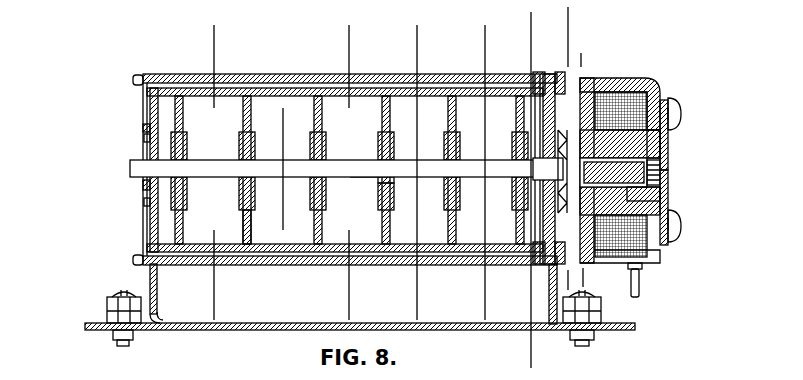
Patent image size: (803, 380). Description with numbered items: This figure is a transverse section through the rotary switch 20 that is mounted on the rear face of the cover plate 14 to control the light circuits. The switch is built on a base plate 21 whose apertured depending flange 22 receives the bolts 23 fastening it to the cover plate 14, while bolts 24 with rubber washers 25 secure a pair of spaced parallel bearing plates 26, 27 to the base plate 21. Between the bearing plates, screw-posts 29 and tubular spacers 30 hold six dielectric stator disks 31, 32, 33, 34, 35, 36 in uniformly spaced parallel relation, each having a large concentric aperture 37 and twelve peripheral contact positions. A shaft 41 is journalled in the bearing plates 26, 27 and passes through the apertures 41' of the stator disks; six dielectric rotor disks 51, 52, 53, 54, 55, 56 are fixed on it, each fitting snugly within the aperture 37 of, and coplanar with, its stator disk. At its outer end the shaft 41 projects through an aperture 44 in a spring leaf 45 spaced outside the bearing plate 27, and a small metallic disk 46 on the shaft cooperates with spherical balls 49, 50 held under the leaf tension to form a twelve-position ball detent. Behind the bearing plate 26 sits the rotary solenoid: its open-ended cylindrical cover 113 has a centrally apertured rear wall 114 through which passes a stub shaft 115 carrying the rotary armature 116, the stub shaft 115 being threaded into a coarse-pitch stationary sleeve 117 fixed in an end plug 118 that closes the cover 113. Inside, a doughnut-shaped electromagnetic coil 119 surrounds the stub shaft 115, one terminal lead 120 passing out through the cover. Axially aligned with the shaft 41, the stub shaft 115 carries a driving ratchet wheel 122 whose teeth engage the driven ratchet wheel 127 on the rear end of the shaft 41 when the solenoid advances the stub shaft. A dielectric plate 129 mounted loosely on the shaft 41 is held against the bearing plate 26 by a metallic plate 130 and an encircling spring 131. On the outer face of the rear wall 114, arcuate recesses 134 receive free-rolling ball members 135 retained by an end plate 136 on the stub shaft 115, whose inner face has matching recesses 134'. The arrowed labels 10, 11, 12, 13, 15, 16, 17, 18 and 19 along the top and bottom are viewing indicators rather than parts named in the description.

The motor section 10 is at (581, 62).
The coupling section 11 is at (568, 47).
The end wall section 12 is at (568, 40).
The sixth stage 13 is at (531, 33).
The cover plate 14 is at (531, 18).
The fifth stage 15 is at (485, 33).
The stage section 16 is at (485, 66).
The fourth stage 17 is at (417, 33).
The stage section 18 is at (417, 66).
The lamp 19 is at (349, 33).
The rotary switch 20 is at (78, 260).
The base plate 21 is at (282, 330).
The depending flange 22 is at (283, 66).
The bolts 23 is at (214, 33).
The bolts 24 is at (118, 296).
The rubber washers 25 is at (110, 315).
The bearing plate 26 is at (147, 112).
The bearing plate 27 is at (152, 331).
The screw-posts 29 is at (388, 104).
The tubular spacers 30 is at (314, 177).
The dielectric stator disk 31 is at (517, 116).
The dielectric stator disk 32 is at (448, 116).
The dielectric stator disk 33 is at (382, 118).
The dielectric stator disk 34 is at (314, 117).
The dielectric stator disk 35 is at (243, 117).
The dielectric stator disk 36 is at (182, 110).
The concentric aperture 37 is at (246, 209).
The shaft 41 is at (406, 192).
The apertures 41' is at (359, 194).
The aperture 44 is at (133, 162).
The spring leaf 45 is at (141, 127).
The small metallic disk 46 is at (143, 185).
The spherical ball 49 is at (143, 138).
The spherical ball 50 is at (143, 202).
The dielectric rotor disk 51 is at (514, 188).
The dielectric rotor disk 52 is at (448, 196).
The dielectric rotor disk 53 is at (391, 195).
The dielectric rotor disk 54 is at (312, 188).
The dielectric rotor disk 55 is at (243, 190).
The dielectric rotor disk 56 is at (186, 191).
The cylindrical cover 113 is at (632, 84).
The rear wall 114 is at (667, 102).
The stub shaft 115 is at (657, 160).
The rotary armature 116 is at (660, 197).
The stationary sleeve 117 is at (655, 142).
The end plug 118 is at (618, 127).
The electromagnetic coil 119 is at (642, 262).
The terminal lead 120 is at (638, 296).
The driving ratchet wheel 122 is at (657, 203).
The driven ratchet wheel 127 is at (536, 240).
The dielectric plate 129 is at (512, 141).
The metallic plate 130 is at (537, 202).
The spring 131 is at (531, 162).
The arcuate recesses 134 is at (691, 235).
The arcuate recesses 134' is at (716, 170).
The ball members 135 is at (668, 238).
The end plate 136 is at (676, 110).